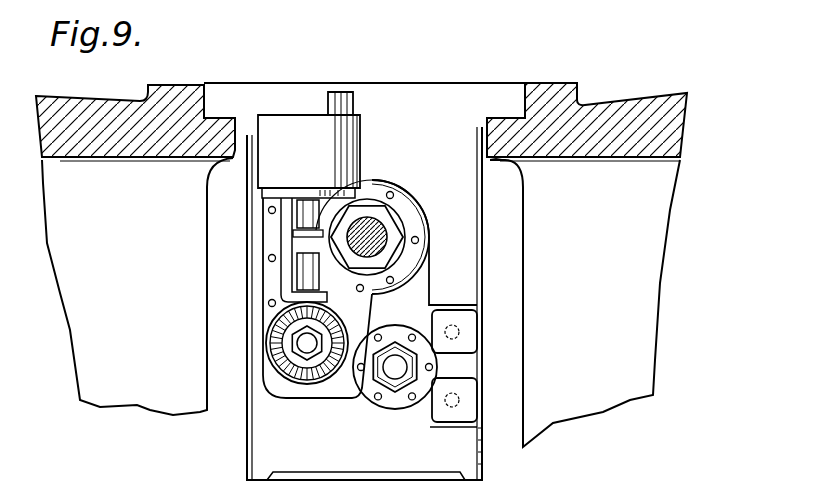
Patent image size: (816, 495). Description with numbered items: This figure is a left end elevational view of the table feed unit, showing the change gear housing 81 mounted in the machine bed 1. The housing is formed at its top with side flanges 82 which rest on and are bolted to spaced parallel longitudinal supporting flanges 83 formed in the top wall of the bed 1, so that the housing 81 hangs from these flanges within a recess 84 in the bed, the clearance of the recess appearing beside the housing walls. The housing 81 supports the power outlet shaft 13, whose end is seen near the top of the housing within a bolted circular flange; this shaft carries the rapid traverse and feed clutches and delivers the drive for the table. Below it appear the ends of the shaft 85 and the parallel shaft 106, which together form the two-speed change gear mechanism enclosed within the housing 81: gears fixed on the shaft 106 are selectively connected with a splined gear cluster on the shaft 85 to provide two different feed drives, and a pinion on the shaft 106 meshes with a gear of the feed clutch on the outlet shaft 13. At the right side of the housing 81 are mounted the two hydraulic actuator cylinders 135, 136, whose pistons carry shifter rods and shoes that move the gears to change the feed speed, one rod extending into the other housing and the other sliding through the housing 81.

The bed 1 is at (637, 110).
The side flanges 82 is at (512, 92).
The supporting flanges 83 is at (502, 158).
The recess 84 is at (507, 427).
The change gear housing 81 is at (257, 452).
The power outlet shaft 13 is at (375, 233).
The shaft 106 is at (308, 350).
The shaft 85 is at (392, 370).
The hydraulic actuator cylinder 136 is at (465, 347).
The hydraulic actuator cylinder 135 is at (465, 400).